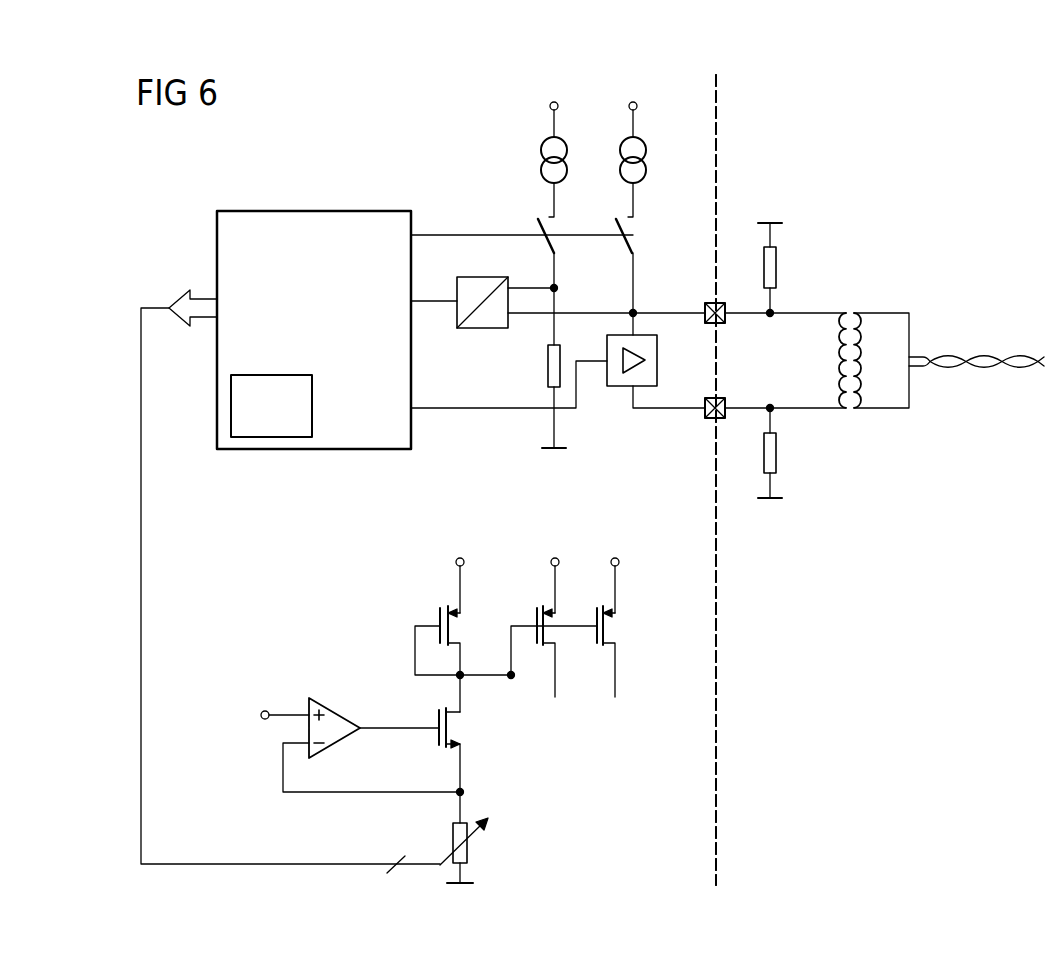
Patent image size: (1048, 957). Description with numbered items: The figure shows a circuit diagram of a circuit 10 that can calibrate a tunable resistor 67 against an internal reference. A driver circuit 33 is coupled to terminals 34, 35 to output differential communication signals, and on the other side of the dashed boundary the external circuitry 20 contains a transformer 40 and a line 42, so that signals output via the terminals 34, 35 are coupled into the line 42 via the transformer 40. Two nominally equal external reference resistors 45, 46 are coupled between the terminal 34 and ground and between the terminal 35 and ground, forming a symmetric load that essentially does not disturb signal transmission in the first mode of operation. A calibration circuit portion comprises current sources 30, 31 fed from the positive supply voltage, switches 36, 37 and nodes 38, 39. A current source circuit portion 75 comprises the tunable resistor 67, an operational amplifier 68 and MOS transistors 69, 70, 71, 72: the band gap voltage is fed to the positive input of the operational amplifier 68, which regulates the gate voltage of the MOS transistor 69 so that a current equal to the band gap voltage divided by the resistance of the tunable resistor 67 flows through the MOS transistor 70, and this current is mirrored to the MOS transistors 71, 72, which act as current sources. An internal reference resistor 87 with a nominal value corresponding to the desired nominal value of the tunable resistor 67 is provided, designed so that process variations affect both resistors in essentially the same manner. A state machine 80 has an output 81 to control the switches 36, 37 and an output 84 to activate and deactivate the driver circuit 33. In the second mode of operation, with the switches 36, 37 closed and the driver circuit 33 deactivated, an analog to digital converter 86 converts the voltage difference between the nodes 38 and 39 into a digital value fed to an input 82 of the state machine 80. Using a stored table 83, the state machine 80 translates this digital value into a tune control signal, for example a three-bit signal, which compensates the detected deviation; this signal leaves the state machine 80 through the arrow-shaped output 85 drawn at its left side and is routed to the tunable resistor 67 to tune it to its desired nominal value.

The circuit 10 is at (394, 100).
The external circuitry 20 is at (868, 102).
The current source 30 is at (541, 150).
The current source 31 is at (646, 150).
The driver circuit 33 is at (658, 357).
The terminal 34 is at (722, 300).
The terminal 35 is at (713, 421).
The switch 36 is at (636, 240).
The switch 37 is at (537, 222).
The node 38 is at (636, 310).
The node 39 is at (558, 288).
The transformer 40 is at (848, 300).
The line 42 is at (1000, 350).
The external reference resistor 45 is at (777, 262).
The external reference resistor 46 is at (777, 452).
The tunable resistor 67 is at (468, 848).
The operational amplifier 68 is at (335, 707).
The MOS transistor 69 is at (449, 722).
The MOS transistor 70 is at (440, 606).
The MOS transistor 71 is at (537, 606).
The MOS transistor 72 is at (604, 637).
The current source circuit portion 75 is at (288, 650).
The state machine 80 is at (309, 211).
The output 81 is at (413, 233).
The input 82 is at (413, 300).
The table 83 is at (312, 403).
The output 84 is at (413, 407).
The resistor control output 85 is at (219, 306).
The analog to digital converter 86 is at (471, 329).
The internal reference resistor 87 is at (546, 365).